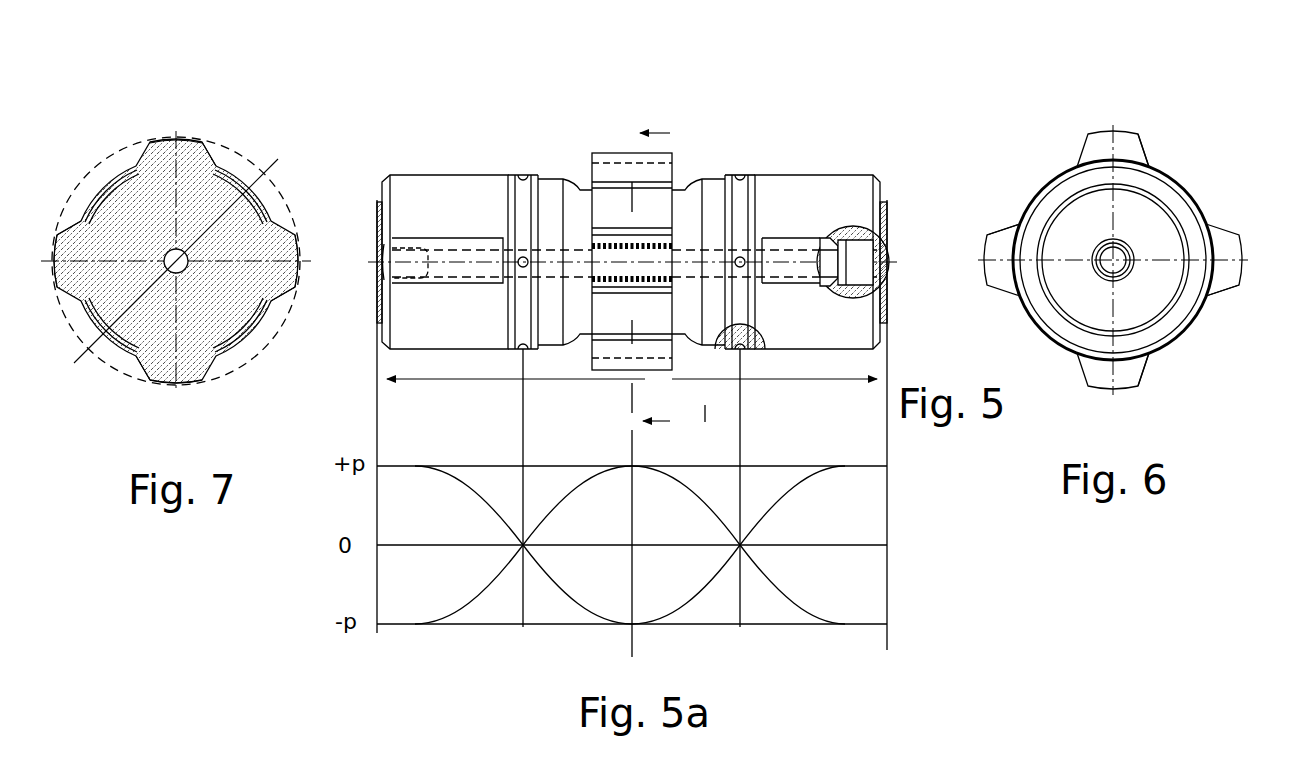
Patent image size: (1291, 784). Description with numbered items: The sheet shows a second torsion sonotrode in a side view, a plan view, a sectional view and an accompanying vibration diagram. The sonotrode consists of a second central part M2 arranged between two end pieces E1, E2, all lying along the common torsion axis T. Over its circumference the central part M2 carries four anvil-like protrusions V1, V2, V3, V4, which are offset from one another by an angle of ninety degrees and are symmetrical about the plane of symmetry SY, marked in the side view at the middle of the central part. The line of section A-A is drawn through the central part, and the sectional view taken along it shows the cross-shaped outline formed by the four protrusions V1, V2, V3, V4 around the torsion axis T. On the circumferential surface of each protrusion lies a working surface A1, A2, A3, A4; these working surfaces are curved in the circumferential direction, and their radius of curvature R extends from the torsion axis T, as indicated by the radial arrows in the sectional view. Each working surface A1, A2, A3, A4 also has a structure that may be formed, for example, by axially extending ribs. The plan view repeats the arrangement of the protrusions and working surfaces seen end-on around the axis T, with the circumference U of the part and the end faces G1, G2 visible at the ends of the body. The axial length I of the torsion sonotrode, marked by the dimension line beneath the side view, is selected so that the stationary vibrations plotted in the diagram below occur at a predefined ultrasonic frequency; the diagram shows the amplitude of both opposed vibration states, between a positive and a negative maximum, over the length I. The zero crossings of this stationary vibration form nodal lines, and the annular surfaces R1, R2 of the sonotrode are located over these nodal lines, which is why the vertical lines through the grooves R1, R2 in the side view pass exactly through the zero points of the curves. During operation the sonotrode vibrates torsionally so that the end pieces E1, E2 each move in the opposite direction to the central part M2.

In FIG. 7, the working surface A1 is at (175, 139).
In FIG. 6, the working surface A1 is at (1113, 133).
In FIG. 7, the working surface A2 is at (185, 384).
In FIG. 6, the working surface A2 is at (1113, 388).
In FIG. 7, the working surface A3 is at (299, 235).
In FIG. 6, the working surface A3 is at (1248, 260).
In FIG. 7, the working surface A4 is at (56, 245).
In FIG. 6, the working surface A4 is at (985, 260).
In FIG. 7, the anvil-like protrusion V1 is at (200, 150).
In FIG. 6, the anvil-like protrusion V1 is at (1180, 137).
In FIG. 7, the anvil-like protrusion V2 is at (150, 372).
In FIG. 6, the anvil-like protrusion V2 is at (1174, 389).
In FIG. 7, the anvil-like protrusion V3 is at (285, 300).
In FIG. 6, the anvil-like protrusion V3 is at (1245, 311).
In FIG. 7, the anvil-like protrusion V4 is at (76, 230).
In FIG. 6, the anvil-like protrusion V4 is at (999, 203).
In FIG. 7, the radius of curvature R is at (185, 268).
In FIG. 7, the torsion axis T is at (176, 261).
In FIG. 5, the torsion axis T is at (452, 275).
In FIG. 6, the torsion axis T is at (1106, 276).
In FIG. 5, the end piece E1 is at (838, 190).
In FIG. 5, the end piece E2 is at (470, 183).
In FIG. 5, the annular surface R1 is at (743, 172).
In FIG. 5, the annular surface R2 is at (527, 172).
In FIG. 5, the first thread / joint G1 is at (889, 222).
In FIG. 5, the second thread / joint G2 is at (388, 253).
In FIG. 5, the second central part M2 is at (740, 134).
In FIG. 5, the plane of symmetry SY is at (632, 143).
In FIG. 6, the circumference U is at (1113, 214).
In FIG. 5, the line of section A- A is at (670, 124).
In FIG. 5A, the line of section A- A is at (656, 408).
In FIG. 5A, the axial length I is at (660, 383).